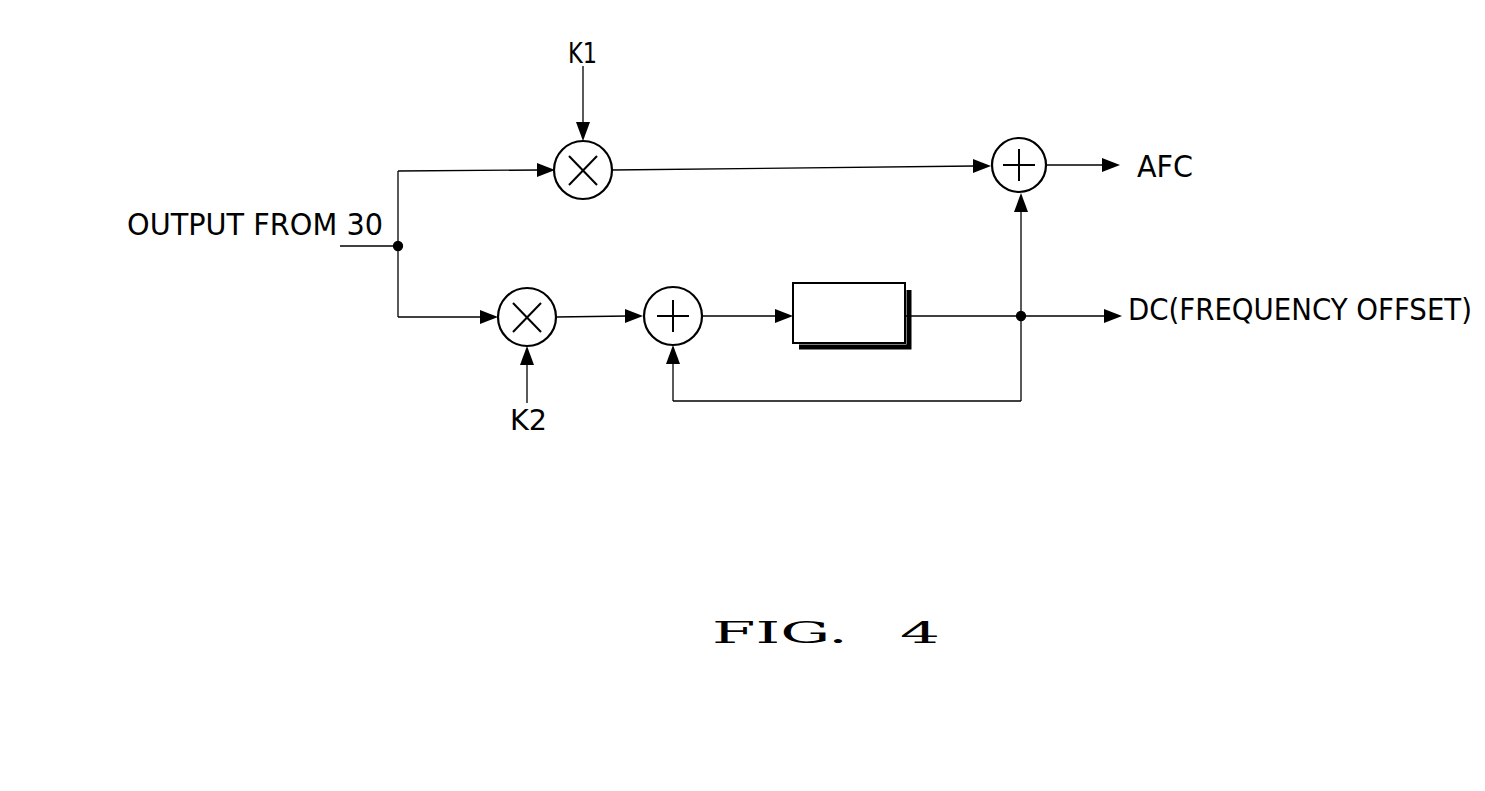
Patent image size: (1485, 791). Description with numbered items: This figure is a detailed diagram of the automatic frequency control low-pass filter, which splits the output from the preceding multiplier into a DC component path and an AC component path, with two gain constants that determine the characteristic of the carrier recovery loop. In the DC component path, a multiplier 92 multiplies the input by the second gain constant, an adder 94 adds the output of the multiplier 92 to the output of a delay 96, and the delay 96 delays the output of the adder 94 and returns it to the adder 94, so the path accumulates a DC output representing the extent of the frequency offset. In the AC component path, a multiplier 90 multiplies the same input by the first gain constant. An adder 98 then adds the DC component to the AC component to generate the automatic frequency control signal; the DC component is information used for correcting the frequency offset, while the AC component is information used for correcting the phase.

The multiplier 90 is at (603, 148).
The multiplier 92 is at (525, 288).
The adder 94 is at (672, 287).
The delay 96 is at (849, 283).
The adder 98 is at (1019, 138).